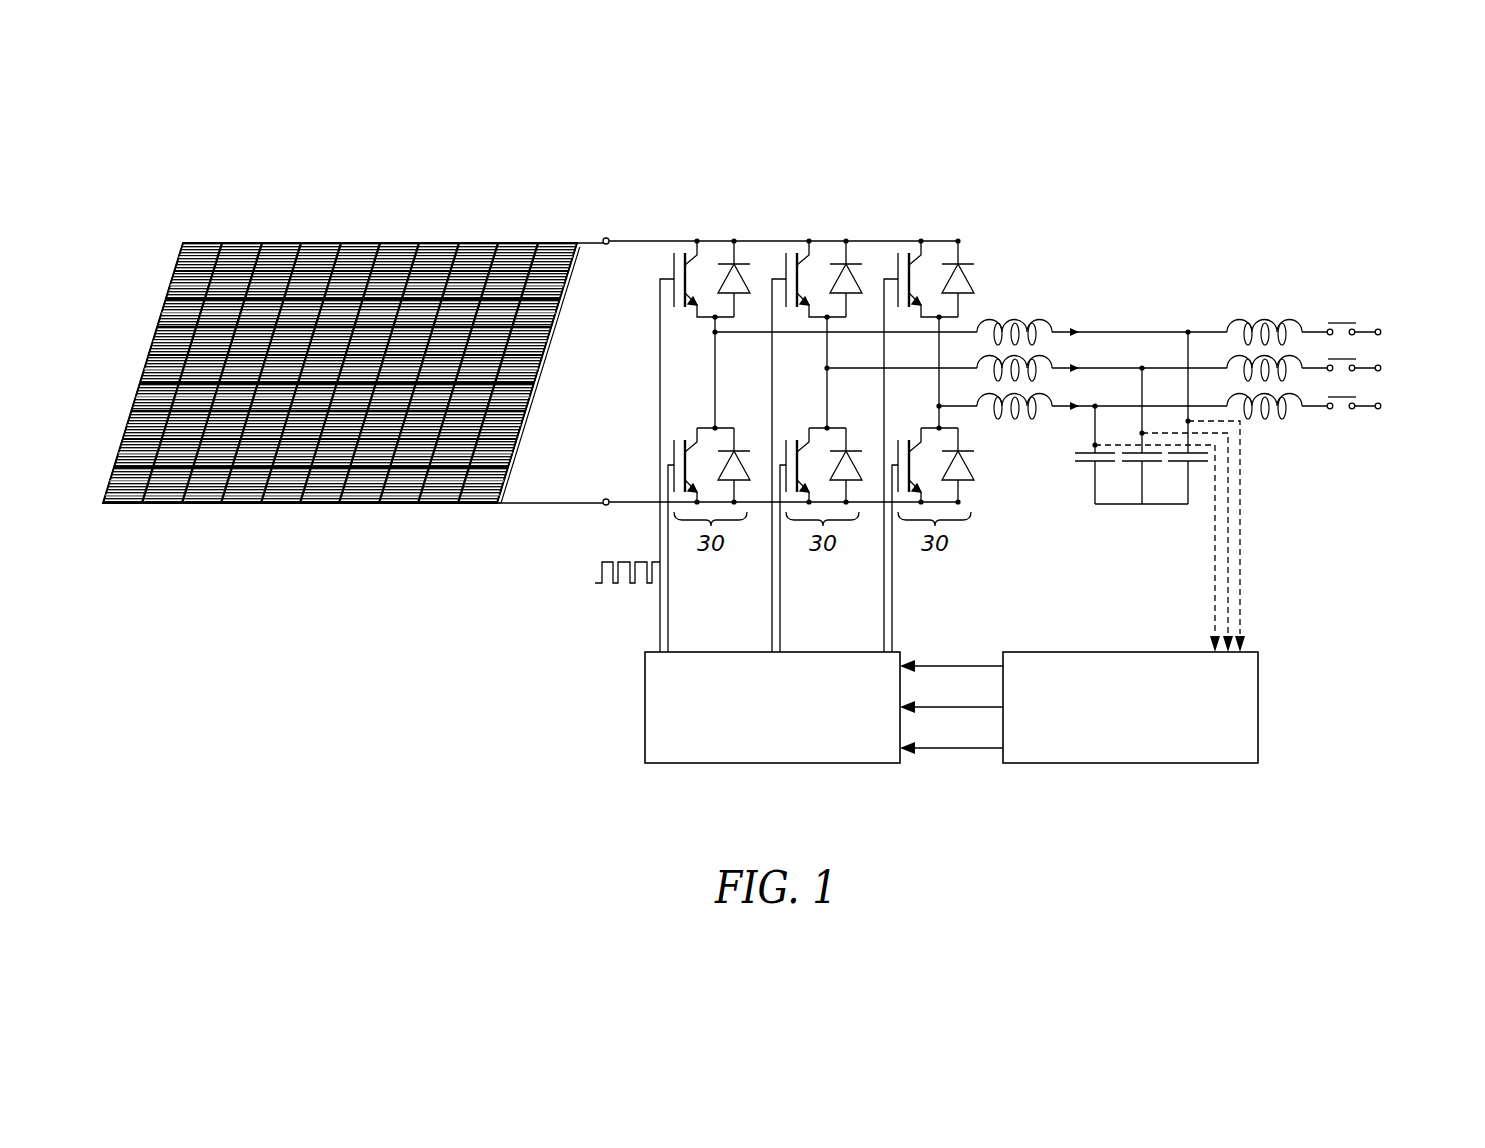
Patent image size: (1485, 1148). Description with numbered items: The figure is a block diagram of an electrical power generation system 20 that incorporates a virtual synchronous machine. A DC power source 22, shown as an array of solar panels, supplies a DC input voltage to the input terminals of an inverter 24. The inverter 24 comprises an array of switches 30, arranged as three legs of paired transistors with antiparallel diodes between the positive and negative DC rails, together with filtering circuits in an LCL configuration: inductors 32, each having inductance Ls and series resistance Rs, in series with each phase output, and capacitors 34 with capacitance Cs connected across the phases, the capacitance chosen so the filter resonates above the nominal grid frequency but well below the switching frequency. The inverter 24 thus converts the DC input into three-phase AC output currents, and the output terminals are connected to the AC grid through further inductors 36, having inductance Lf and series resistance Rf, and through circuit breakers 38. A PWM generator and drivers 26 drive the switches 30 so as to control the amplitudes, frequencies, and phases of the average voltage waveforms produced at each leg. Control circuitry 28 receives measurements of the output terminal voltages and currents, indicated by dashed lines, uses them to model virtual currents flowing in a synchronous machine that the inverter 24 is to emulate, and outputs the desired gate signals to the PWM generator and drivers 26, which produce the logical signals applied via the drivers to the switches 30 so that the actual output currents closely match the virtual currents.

The electrical power generation system 20 is at (168, 152).
The DC power source 22 is at (97, 513).
The inverter 24 is at (605, 222).
The PWM generator and drivers 26 is at (645, 701).
The control circuitry 28 is at (1259, 711).
The switches 30 is at (817, 445).
The inductors 32 is at (1054, 322).
The capacitors 34 is at (1114, 465).
The inductors 36 is at (1227, 270).
The circuit breakers 38 is at (1340, 357).